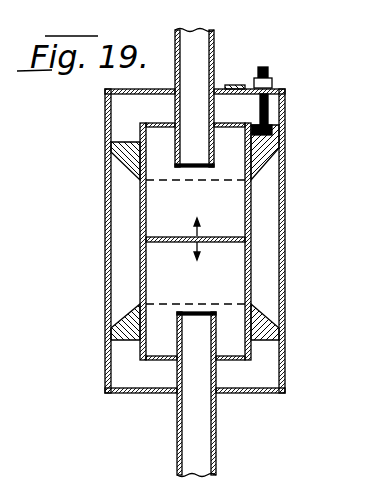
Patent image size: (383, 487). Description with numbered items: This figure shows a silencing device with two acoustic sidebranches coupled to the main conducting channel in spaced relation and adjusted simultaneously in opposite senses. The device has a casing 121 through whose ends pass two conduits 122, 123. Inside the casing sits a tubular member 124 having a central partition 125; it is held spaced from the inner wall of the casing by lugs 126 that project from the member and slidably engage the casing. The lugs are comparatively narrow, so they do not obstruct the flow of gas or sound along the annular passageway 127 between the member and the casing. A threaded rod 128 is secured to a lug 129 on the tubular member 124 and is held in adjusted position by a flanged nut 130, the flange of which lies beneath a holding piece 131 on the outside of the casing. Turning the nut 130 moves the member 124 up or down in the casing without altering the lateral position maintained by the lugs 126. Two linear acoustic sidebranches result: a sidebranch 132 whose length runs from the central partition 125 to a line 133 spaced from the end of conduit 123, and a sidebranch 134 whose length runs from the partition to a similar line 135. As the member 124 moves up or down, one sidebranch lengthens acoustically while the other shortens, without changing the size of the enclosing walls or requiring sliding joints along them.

The casing 121 is at (284, 252).
The conduit 122 is at (217, 433).
The conduit 123 is at (214, 63).
The tubular member 124 is at (251, 212).
The central partition 125 is at (163, 237).
The lugs 126 is at (130, 160).
The annular passageway 127 is at (262, 276).
The threaded rod 128 is at (266, 112).
The lug 129 is at (280, 130).
The flanged nut 130 is at (272, 84).
The holding piece 131 is at (242, 86).
The sidebranch 132 is at (199, 219).
The line 133 is at (213, 181).
The sidebranch 134 is at (193, 260).
The line 135 is at (191, 305).